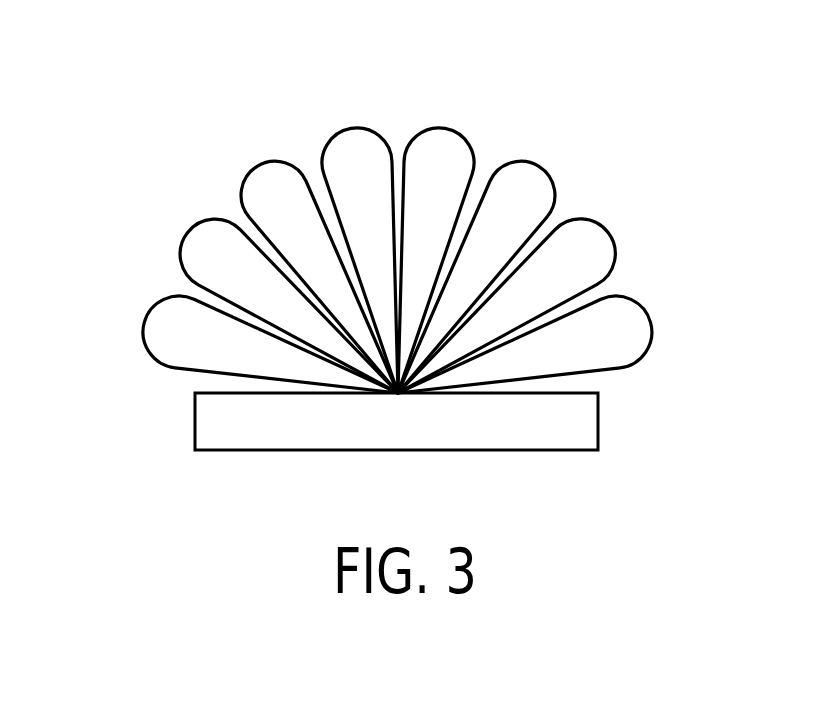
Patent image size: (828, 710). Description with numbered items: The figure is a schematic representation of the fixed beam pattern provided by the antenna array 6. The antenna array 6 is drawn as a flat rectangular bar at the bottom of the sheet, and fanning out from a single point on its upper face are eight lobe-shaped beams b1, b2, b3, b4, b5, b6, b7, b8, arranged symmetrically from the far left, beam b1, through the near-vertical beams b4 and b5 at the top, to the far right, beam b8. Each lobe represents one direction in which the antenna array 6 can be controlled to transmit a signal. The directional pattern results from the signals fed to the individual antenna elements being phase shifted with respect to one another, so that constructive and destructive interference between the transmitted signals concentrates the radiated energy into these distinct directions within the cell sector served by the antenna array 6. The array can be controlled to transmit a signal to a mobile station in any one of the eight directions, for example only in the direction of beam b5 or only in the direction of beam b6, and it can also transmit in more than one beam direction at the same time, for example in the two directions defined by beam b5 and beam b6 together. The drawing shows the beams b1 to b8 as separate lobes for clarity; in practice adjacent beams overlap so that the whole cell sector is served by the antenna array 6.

The antenna array 6 is at (407, 428).
The beam b1 is at (170, 324).
The beam b2 is at (197, 250).
The beam b3 is at (257, 183).
The beam b4 is at (347, 146).
The beam b5 is at (448, 146).
The beam b6 is at (538, 184).
The beam b7 is at (593, 250).
The beam b8 is at (625, 329).